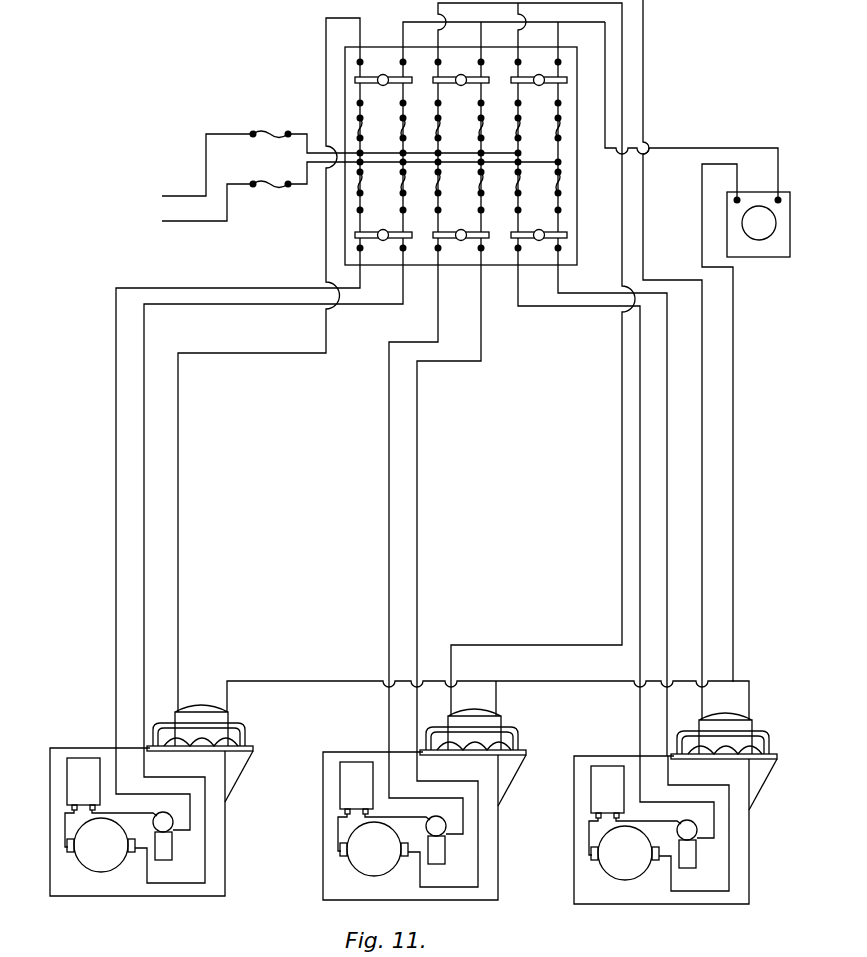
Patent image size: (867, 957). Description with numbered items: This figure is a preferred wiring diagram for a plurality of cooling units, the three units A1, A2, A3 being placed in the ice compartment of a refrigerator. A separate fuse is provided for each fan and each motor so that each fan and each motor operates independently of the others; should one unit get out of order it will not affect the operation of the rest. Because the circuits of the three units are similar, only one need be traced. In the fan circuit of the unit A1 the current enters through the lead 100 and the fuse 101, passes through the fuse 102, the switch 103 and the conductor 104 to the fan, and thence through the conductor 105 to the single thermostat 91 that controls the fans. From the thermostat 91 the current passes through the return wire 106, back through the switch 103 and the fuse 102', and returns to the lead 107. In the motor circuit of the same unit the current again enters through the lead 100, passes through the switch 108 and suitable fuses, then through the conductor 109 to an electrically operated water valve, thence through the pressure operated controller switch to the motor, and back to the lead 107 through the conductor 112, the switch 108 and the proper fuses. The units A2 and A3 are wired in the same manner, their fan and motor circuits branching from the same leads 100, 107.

The lead 100 is at (206, 167).
The fuse 101 is at (270, 132).
The fuse 102 is at (378, 150).
The fuse 102' is at (384, 155).
The switch 103 is at (372, 77).
The conductor 104 is at (326, 46).
The conductor 105 is at (303, 681).
The return wire 106 is at (690, 147).
The lead 107 is at (184, 222).
The switch 108 is at (368, 232).
The conductor 109 is at (116, 568).
The conductor 112 is at (145, 618).
The thermostat 91 is at (759, 240).
The unit A1 is at (225, 840).
The unit A2 is at (435, 826).
The unit A3 is at (686, 830).